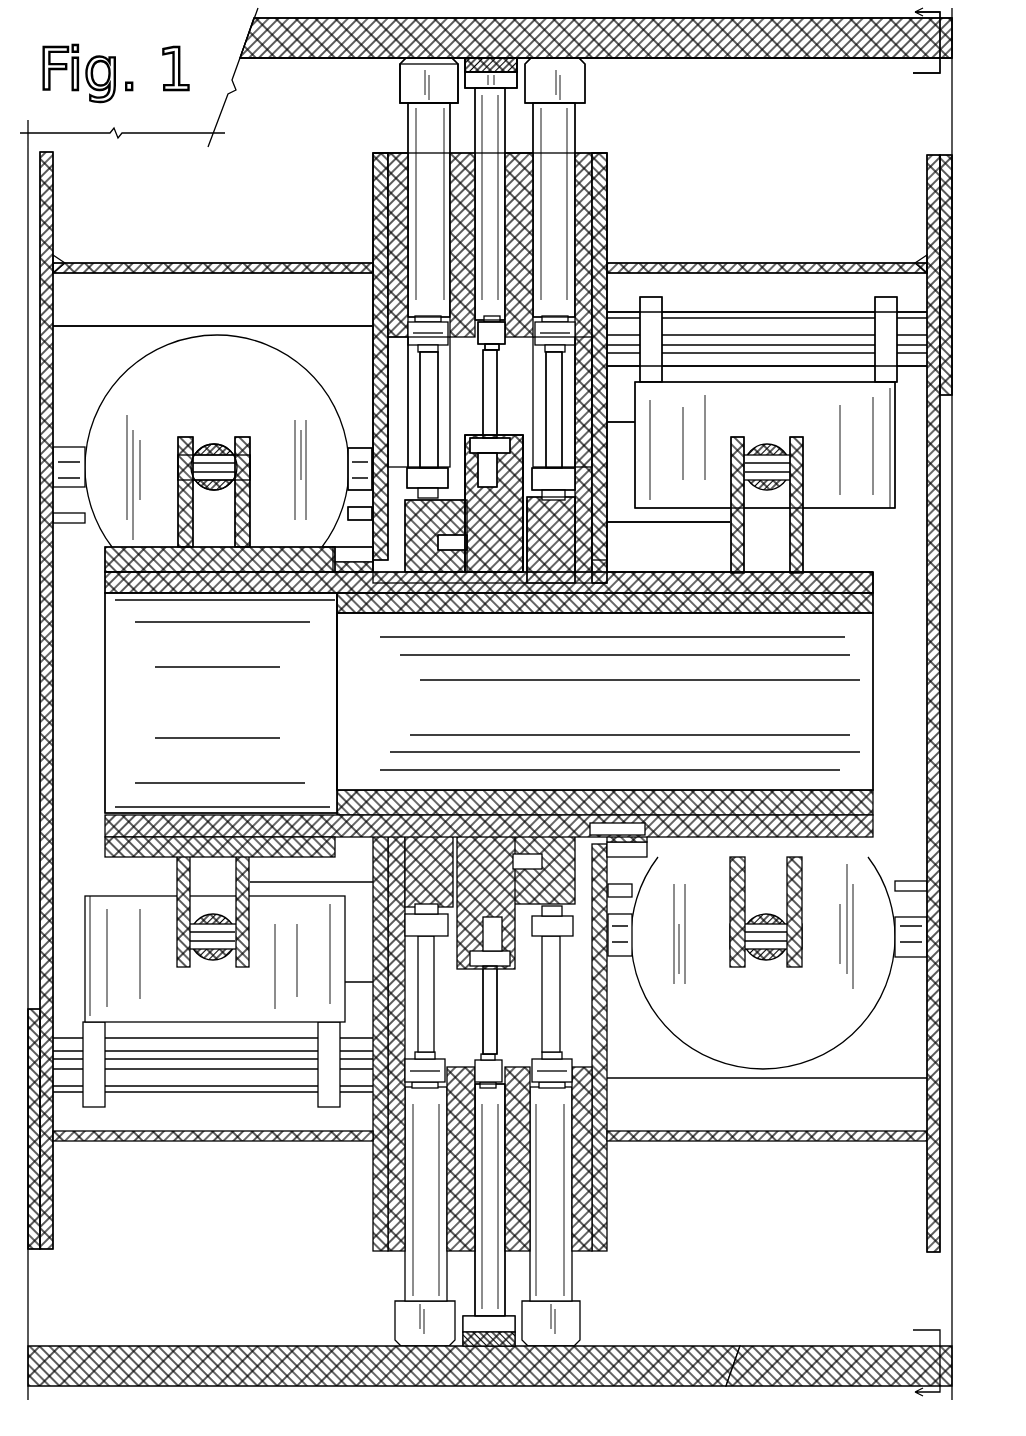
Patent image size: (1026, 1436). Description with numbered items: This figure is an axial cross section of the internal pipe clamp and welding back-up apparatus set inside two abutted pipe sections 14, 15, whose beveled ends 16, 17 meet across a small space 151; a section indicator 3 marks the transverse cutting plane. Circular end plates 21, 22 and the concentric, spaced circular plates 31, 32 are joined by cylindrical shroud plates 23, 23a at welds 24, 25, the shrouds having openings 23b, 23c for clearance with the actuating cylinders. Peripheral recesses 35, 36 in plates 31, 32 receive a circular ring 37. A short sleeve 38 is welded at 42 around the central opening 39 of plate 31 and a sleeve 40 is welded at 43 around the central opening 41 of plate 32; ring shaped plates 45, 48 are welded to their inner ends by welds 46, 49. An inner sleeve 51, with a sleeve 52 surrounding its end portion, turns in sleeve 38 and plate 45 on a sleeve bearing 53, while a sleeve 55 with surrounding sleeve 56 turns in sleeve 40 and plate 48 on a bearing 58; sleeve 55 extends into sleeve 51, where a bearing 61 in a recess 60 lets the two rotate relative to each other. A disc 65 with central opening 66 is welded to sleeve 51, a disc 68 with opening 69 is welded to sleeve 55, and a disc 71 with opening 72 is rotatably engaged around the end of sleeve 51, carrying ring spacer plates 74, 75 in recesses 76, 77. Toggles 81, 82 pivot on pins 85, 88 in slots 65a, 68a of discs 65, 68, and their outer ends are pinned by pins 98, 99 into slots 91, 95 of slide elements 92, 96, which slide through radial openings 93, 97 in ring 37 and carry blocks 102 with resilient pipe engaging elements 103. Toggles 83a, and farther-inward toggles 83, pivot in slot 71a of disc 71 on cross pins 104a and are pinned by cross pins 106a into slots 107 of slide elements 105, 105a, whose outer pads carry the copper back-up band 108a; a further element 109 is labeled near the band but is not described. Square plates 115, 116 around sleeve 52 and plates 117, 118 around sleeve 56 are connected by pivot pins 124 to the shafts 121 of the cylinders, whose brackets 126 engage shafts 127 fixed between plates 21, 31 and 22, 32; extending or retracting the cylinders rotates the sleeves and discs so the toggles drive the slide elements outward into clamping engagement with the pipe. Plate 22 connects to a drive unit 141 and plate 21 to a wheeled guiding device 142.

The section line 3- 3 is at (910, 674).
The pipe length 14 is at (200, 1345).
The pipe length 15 is at (715, 1345).
The beveled pipe end 16 is at (400, 1340).
The beveled pipe end 17 is at (585, 1345).
The circular plate 21 is at (53, 188).
The circular plate 22 is at (927, 180).
The shroud plate 23 is at (200, 1141).
The cylindrical plate 23a is at (735, 1141).
The opening 23b is at (80, 326).
The opening 23c is at (760, 382).
The weld 24 is at (53, 1141).
The weld 25 is at (927, 1135).
The circular plate 31 is at (373, 1190).
The circular plate 32 is at (607, 1185).
The peripheral recess 35 is at (373, 165).
The peripheral recess 36 is at (607, 170).
The circular ring 37 is at (600, 220).
The cylindrical sleeve 38 is at (333, 547).
The central opening 39 is at (237, 703).
The cylindrical sleeve 40 is at (660, 572).
The central opening 41 is at (580, 613).
The weld 42 is at (340, 590).
The weld 43 is at (620, 613).
The ring shaped plate 45 is at (373, 440).
The weld 46 is at (348, 507).
The ring shaped plate 48 is at (607, 516).
The weld 49 is at (590, 613).
The sleeve 51 is at (105, 585).
The sleeve 52 is at (105, 555).
The sleeve shaped bearing 53 is at (350, 613).
The sleeve 55 is at (873, 605).
The sleeve 56 is at (873, 580).
The sleeve shaped bearing 58 is at (700, 613).
The recess 60 is at (480, 613).
The sleeve bearing 61 is at (470, 613).
The circular disc 65 is at (348, 455).
The groove or slot 65a is at (410, 620).
The central circular opening 66 is at (445, 613).
The circular disc 68 is at (607, 565).
The groove or slot 68a is at (607, 510).
The central circular opening 69 is at (555, 613).
The circular disc 71 is at (607, 545).
The groove or slot 71a is at (505, 613).
The circular opening 72 is at (515, 613).
The circular ring spacer plate 74 is at (465, 440).
The circular ring spacer plate 75 is at (523, 445).
The recess 76 is at (478, 438).
The recess 77 is at (505, 440).
The toggle or link 81 is at (418, 965).
The toggle or link 82 is at (548, 1000).
The toggle 83 is at (483, 1000).
The toggle or link 83a is at (483, 385).
The pivot pin 85 is at (407, 475).
The pivot pin 88 is at (545, 470).
The slot 91 is at (395, 285).
The slide element 92 is at (405, 1273).
The cylindrical opening 93 is at (400, 152).
The slot 95 is at (607, 268).
The slide element 96 is at (575, 1273).
The cylindrical opening 97 is at (540, 150).
The pin 98 is at (420, 400).
The pin 99 is at (546, 400).
The block 102 is at (585, 88).
The resilient pipe engaging element 103 is at (530, 62).
The cross pin 104a is at (635, 422).
The slide element 105 is at (460, 1281).
The slide element 105a is at (475, 120).
The cross pin 106a is at (483, 360).
The slot 107 is at (497, 345).
The arcuate band 108a is at (518, 72).
The nut 109 is at (505, 100).
The plate 115 is at (178, 920).
The plate 116 is at (250, 920).
The plate 117 is at (731, 880).
The plate 118 is at (803, 885).
The cylinder shaft 121 is at (755, 975).
The pivot pin 124 is at (780, 970).
The bracket 126 is at (318, 1107).
The shaft 127 is at (190, 1092).
The drive unit 141 is at (935, 1252).
The device 142 is at (53, 1250).
The space 151 is at (520, 1345).